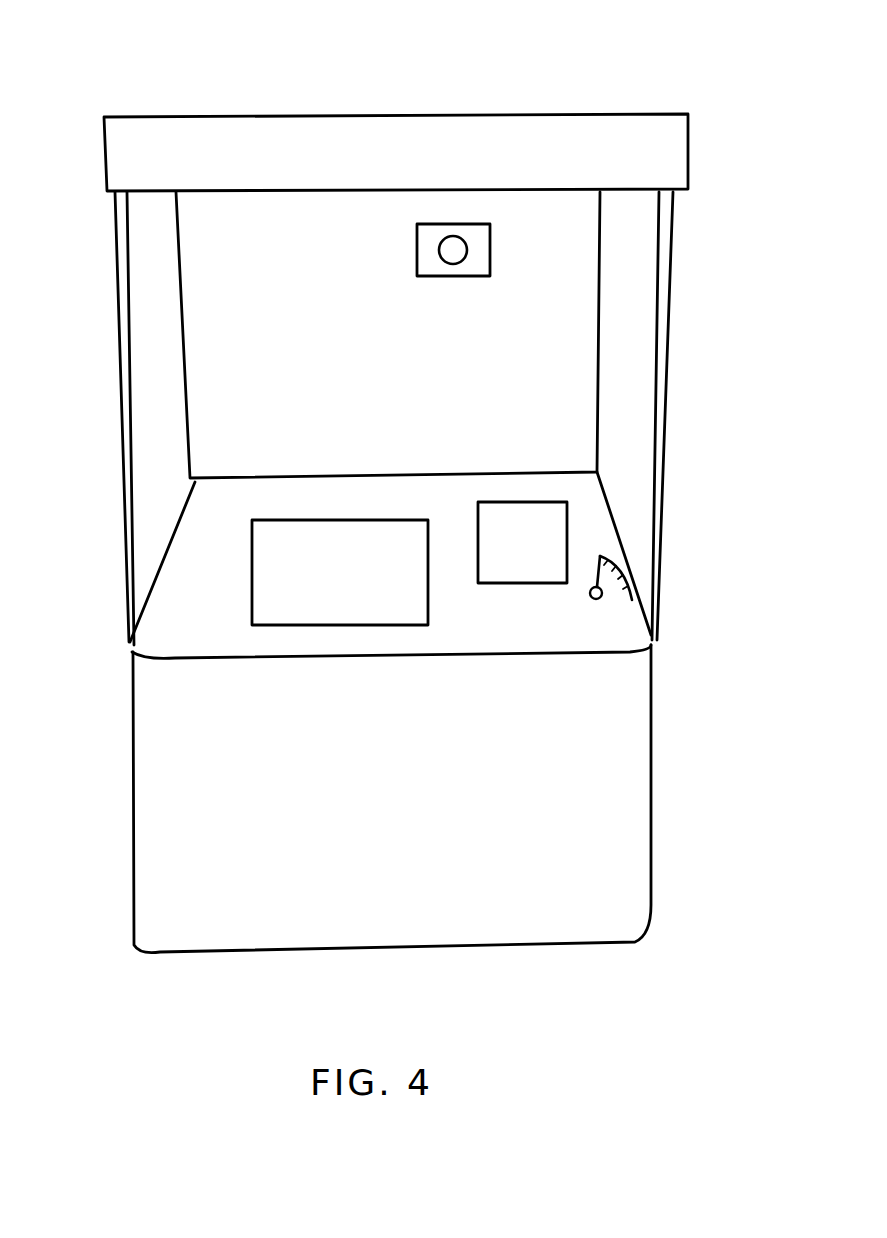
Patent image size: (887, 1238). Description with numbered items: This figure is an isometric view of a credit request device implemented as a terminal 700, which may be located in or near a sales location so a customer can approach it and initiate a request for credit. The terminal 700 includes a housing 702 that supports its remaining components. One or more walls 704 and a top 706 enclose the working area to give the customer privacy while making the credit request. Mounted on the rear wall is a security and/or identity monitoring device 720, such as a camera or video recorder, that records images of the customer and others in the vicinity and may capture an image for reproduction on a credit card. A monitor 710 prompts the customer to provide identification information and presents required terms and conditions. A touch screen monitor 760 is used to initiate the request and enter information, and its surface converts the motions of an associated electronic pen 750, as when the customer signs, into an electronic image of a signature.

The terminal 700 is at (172, 50).
The housing 702 is at (628, 740).
The walls 704 is at (322, 250).
The top 706 is at (400, 156).
The monitor 710 is at (370, 592).
The security and/or identity monitoring device 720 is at (493, 234).
The electronic pen 750 is at (610, 548).
The touch screen monitor 760 is at (540, 552).